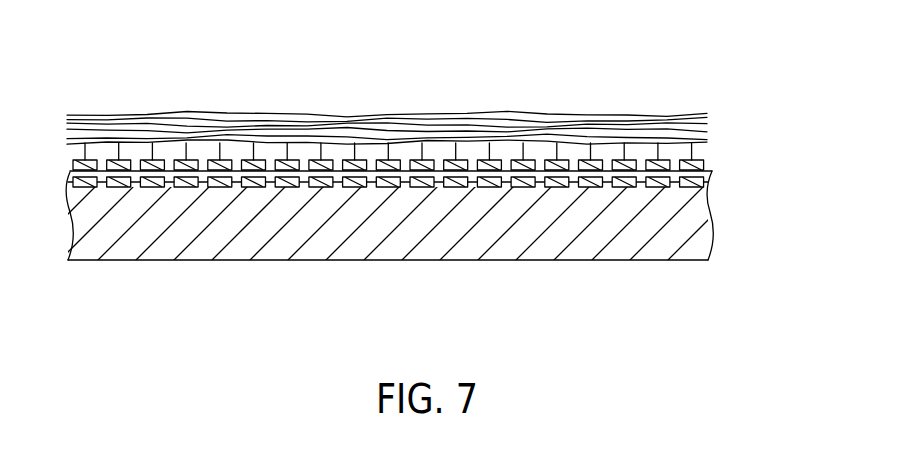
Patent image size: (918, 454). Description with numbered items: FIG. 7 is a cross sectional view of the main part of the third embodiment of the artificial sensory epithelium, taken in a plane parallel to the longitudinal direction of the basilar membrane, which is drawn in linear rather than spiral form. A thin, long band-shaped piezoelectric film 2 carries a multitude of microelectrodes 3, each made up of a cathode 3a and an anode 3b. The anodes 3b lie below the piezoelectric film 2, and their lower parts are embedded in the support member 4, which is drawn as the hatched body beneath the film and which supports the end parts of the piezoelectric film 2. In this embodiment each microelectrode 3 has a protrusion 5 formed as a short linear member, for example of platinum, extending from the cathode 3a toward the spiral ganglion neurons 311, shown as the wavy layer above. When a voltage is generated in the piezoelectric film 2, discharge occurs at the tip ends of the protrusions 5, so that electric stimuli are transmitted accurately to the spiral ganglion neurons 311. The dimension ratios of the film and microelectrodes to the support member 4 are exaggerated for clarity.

The piezoelectric film 2 is at (75, 172).
The microelectrode 3 is at (439, 150).
The cathode 3a is at (705, 163).
The anode 3b is at (707, 182).
The support member 4 is at (82, 225).
The protrusion 5 is at (705, 152).
The spiral ganglion neurons 311 is at (623, 116).